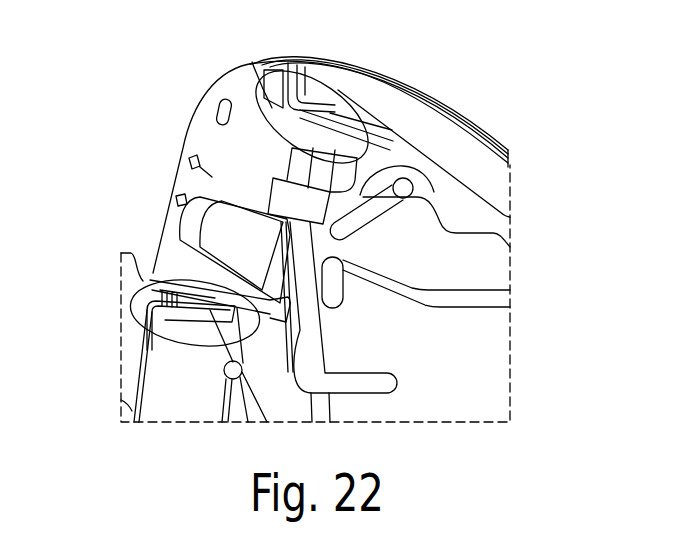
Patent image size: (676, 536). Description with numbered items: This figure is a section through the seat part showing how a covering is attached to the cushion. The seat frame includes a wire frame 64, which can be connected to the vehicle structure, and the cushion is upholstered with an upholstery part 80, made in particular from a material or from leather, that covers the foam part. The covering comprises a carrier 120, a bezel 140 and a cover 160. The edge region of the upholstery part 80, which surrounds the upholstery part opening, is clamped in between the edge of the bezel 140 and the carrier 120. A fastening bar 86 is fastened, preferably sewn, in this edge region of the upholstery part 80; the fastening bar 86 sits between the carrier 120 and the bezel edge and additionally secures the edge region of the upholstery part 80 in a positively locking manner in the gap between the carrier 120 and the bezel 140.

The wire frame 64 is at (383, 385).
The upholstery part 80 is at (463, 113).
The fastening bar 86 is at (352, 72).
The carrier 120 is at (140, 321).
The bezel 140 is at (156, 280).
The cover 160 is at (190, 142).